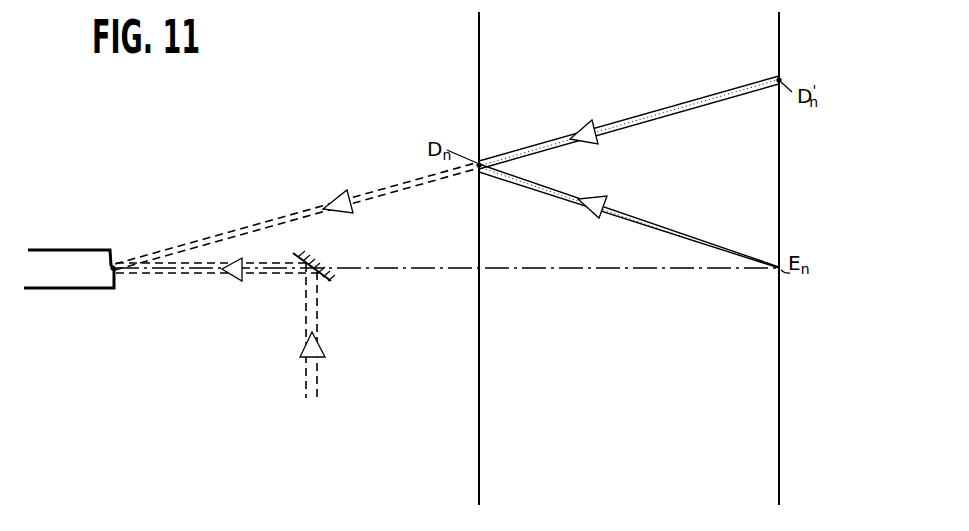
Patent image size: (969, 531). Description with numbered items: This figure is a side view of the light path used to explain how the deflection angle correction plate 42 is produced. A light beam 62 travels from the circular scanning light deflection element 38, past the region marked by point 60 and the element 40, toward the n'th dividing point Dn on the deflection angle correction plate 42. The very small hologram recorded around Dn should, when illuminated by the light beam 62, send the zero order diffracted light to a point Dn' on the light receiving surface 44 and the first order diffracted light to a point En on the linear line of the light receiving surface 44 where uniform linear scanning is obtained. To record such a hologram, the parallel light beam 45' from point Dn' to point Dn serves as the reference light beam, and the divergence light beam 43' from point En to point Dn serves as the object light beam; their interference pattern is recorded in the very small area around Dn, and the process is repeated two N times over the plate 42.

The circular scanning light deflection element 38 is at (73, 250).
The point source 60 is at (114, 264).
The light beam 62 is at (295, 210).
The beam splitter mirror 40 is at (322, 268).
The deflection angle correction plate 42 is at (482, 118).
The light receiving surface 44 is at (781, 48).
The parallel light beam 45' is at (629, 122).
The divergence light beam 43' is at (629, 216).